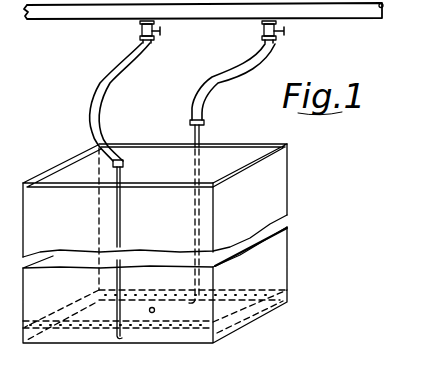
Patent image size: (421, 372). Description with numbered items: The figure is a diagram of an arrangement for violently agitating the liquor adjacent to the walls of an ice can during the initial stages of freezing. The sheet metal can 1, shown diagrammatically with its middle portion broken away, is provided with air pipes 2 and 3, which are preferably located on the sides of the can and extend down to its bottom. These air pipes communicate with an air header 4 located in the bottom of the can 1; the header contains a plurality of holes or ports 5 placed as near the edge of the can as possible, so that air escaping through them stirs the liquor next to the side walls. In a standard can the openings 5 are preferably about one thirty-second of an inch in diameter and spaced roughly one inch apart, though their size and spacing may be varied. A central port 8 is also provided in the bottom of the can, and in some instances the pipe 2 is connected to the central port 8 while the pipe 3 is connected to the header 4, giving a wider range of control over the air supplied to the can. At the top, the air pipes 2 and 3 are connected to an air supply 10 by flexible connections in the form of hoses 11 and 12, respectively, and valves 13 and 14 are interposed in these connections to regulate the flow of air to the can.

The sheet metal can 1 is at (270, 185).
The air pipe 2 is at (123, 172).
The air pipe 3 is at (199, 131).
The air header 4 is at (195, 366).
The holes or ports 5 is at (245, 312).
The central port 8 is at (147, 333).
The air supply 10 is at (330, 17).
The hose 11 is at (102, 99).
The hose 12 is at (210, 85).
The valve 13 is at (141, 33).
The valve 14 is at (274, 40).